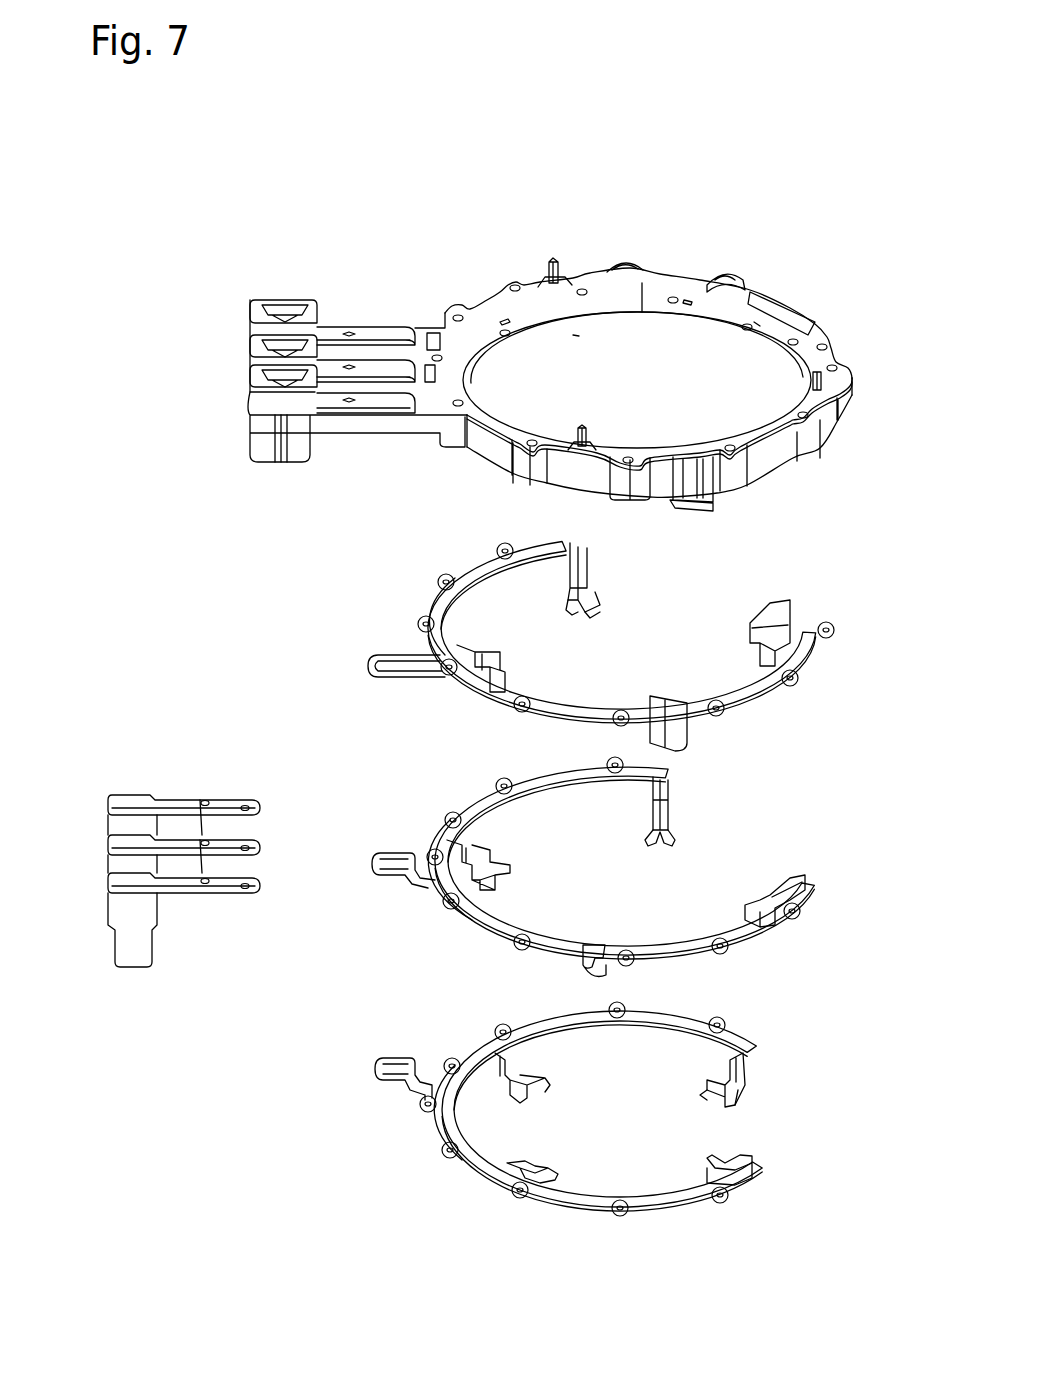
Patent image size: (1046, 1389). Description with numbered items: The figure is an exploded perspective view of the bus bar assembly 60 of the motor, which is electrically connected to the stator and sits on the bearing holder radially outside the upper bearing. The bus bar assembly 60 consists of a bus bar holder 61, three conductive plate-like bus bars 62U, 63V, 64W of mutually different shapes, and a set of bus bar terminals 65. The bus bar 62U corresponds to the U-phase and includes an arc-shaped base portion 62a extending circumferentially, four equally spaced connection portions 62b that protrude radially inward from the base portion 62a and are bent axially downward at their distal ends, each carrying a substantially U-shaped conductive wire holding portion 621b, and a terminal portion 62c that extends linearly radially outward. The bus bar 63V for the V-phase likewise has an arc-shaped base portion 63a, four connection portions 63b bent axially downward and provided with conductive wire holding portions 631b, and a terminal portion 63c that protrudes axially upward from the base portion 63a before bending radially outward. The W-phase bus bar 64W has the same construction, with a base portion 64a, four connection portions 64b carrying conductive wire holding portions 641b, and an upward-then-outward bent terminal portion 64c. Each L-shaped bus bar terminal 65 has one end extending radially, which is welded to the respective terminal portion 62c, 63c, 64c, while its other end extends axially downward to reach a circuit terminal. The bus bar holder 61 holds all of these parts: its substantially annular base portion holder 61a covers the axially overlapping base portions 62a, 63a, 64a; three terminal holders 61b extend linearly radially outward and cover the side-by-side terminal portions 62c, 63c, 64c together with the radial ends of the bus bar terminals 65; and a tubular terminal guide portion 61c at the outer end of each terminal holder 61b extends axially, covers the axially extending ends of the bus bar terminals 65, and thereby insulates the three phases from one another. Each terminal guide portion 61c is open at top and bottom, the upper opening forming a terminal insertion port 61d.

The bus bar assembly 60 is at (708, 220).
The bus bar holder 61 is at (485, 298).
The base portion holder 61a is at (505, 283).
The terminal holder 61b is at (380, 396).
The terminal guide portion 61c is at (260, 440).
The terminal insertion port 61d is at (270, 378).
The bus bar 62U is at (803, 592).
The base portion 62a is at (440, 592).
The connection portion 62b is at (587, 550).
The terminal portion 62c is at (388, 653).
The conductive wire holding portion 621b is at (607, 605).
The bus bar 63V is at (737, 950).
The base portion 63a is at (473, 917).
The connection portion 63b is at (665, 803).
The terminal portion 63c is at (390, 853).
The conductive wire holding portion 631b is at (675, 840).
The bus bar 64W is at (710, 1200).
The base portion 64a is at (443, 1128).
The connection portion 64b is at (517, 1063).
The terminal portion 64c is at (373, 1072).
The conductive wire holding portion 641b is at (733, 1097).
The bus bar terminal 65 is at (197, 877).